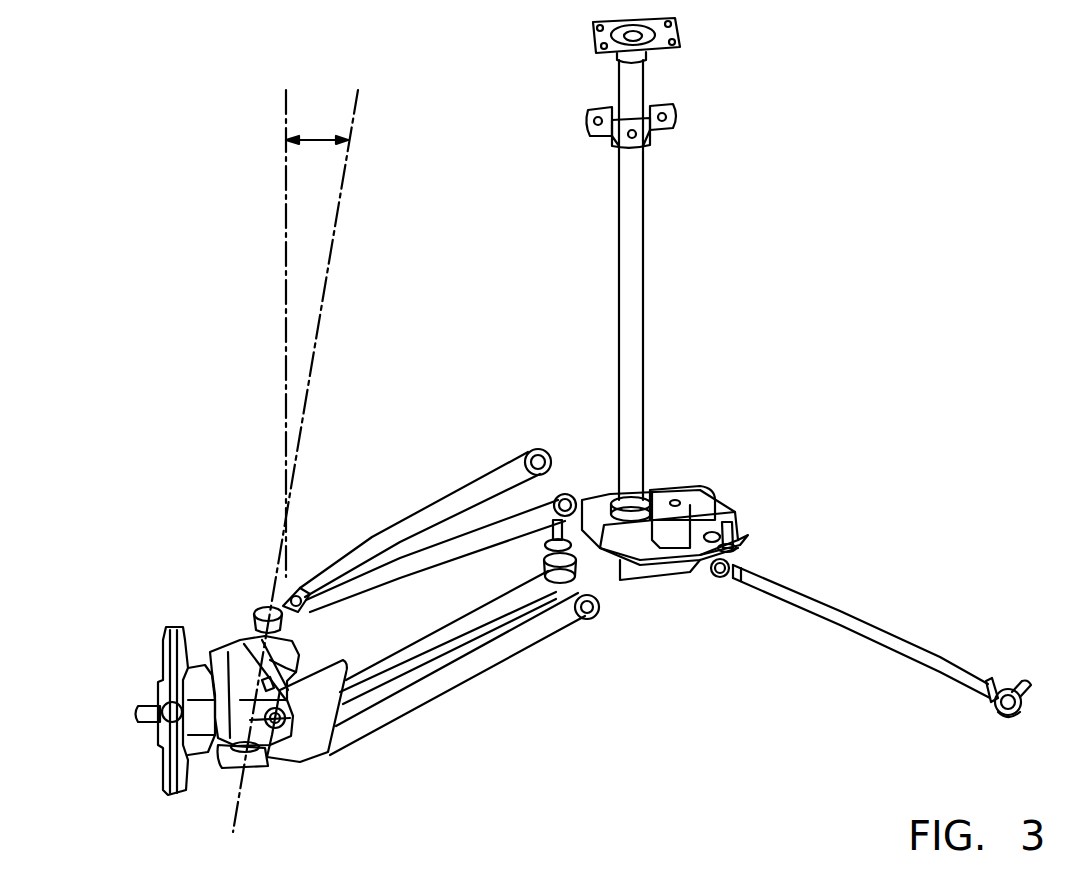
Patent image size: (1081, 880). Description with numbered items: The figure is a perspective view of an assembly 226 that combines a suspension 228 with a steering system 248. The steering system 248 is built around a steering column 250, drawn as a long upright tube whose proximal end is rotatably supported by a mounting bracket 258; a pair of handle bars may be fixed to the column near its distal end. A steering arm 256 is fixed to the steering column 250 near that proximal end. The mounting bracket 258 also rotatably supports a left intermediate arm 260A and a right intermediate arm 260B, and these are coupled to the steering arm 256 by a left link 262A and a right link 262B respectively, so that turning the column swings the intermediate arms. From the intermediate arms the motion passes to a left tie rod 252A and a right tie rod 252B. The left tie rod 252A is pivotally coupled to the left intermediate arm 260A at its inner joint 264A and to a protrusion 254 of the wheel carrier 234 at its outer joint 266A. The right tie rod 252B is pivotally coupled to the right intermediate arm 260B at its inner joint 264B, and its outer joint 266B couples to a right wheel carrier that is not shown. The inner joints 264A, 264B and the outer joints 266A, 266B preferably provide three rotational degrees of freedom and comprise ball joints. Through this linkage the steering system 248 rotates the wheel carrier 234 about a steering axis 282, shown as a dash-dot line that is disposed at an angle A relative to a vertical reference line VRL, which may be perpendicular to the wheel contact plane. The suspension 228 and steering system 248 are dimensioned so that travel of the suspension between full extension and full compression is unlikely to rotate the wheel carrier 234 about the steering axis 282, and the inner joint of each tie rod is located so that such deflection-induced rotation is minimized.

The assembly 226 is at (807, 759).
The suspension 228 is at (418, 368).
The wheel carrier 234 is at (240, 640).
The steering system 248 is at (782, 704).
The steering column 250 is at (643, 268).
The left tie rod 252A is at (420, 637).
The right tie rod 252B is at (870, 620).
The protrusion 254 is at (347, 665).
The steering arm 256 is at (648, 492).
The mounting bracket 258 is at (690, 488).
The left intermediate arm 260A is at (537, 558).
The right intermediate arm 260B is at (740, 537).
The left link 262A is at (613, 490).
The right link 262B is at (683, 583).
The inner joint 264A is at (595, 618).
The inner joint 264B is at (720, 572).
The outer joint 266A is at (244, 750).
The outer joint 266B is at (1000, 713).
The steering axis 282 is at (340, 213).
The vertical reference line VRL is at (283, 180).
The angle A is at (320, 138).